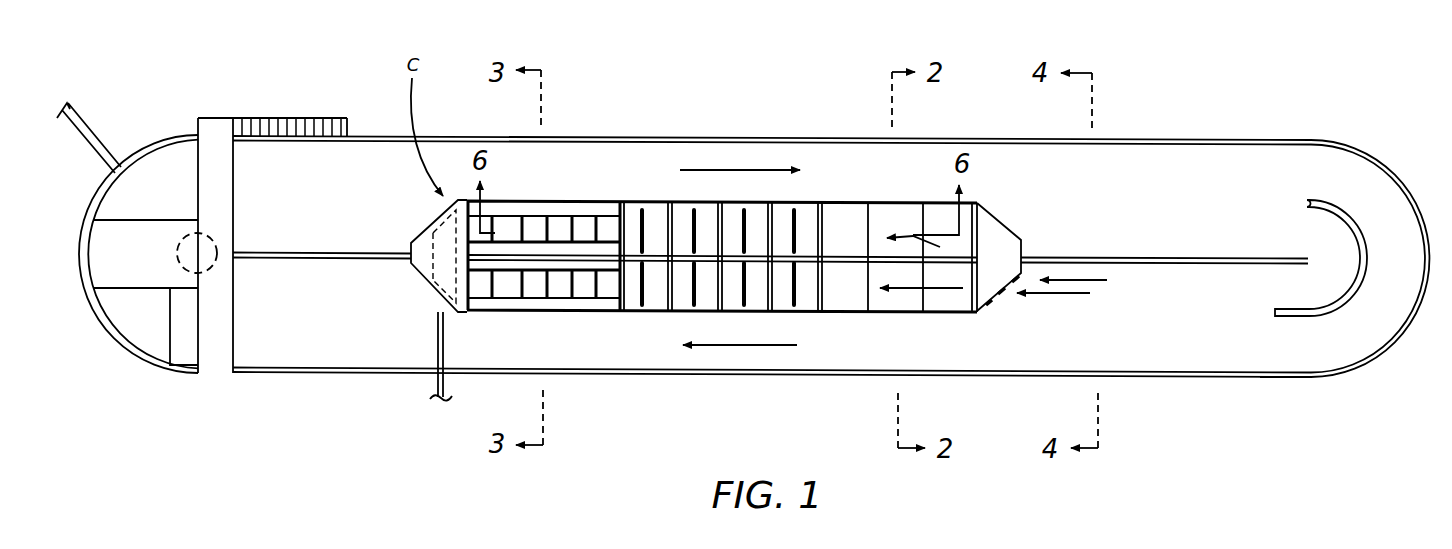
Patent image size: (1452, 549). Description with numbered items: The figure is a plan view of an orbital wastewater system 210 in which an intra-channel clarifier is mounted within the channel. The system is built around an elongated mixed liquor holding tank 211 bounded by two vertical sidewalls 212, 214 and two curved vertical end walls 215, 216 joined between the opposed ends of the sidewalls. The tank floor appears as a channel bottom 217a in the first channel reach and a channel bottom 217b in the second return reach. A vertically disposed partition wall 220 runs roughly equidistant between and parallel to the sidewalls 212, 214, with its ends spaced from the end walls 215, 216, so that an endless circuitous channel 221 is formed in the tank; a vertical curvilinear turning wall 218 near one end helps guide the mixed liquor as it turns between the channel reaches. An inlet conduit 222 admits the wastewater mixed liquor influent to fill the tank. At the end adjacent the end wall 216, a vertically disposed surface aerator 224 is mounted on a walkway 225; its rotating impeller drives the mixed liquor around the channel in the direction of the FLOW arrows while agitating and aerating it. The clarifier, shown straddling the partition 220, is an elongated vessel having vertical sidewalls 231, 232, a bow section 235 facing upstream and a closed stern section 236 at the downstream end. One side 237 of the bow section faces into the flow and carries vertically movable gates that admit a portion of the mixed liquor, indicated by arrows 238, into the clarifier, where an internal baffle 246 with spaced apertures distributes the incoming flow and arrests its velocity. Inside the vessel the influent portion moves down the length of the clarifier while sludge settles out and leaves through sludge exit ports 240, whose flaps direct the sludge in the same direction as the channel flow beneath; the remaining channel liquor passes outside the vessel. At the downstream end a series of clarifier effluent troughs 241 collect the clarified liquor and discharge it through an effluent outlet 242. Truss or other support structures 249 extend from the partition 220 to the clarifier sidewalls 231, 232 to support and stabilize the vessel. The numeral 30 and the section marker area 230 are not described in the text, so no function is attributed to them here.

The heat exchanger insert 30 is at (417, 285).
The orbital system 210 is at (711, 131).
The mixed liquor holding tank 211 is at (1322, 377).
The sidewall 212 is at (650, 377).
The sidewall 214 is at (803, 137).
The end wall 215 is at (1390, 345).
The end wall 216 is at (120, 343).
The channel bottom 217a is at (1158, 168).
The channel bottom 217b is at (1235, 342).
The turning wall 218 is at (1340, 205).
The partition wall 220 is at (1213, 256).
The circuitous channel 221 is at (720, 250).
The inlet conduit 222 is at (93, 137).
The surface aerator 224 is at (203, 233).
The walkway 225 is at (169, 367).
The downstream nose section 230 is at (988, 203).
The sidewall 231 is at (640, 201).
The sidewall 232 is at (827, 312).
The bow section 235 is at (997, 245).
The stern section 236 is at (422, 233).
The side of the bow section 237 is at (985, 305).
The arrows 238 is at (1093, 273).
The sludge exit ports 240 is at (792, 225).
The clarifier effluent troughs 241 is at (567, 252).
The effluent outlet 242 is at (437, 378).
The internal baffle 246 is at (967, 293).
The support structures 249 is at (922, 297).